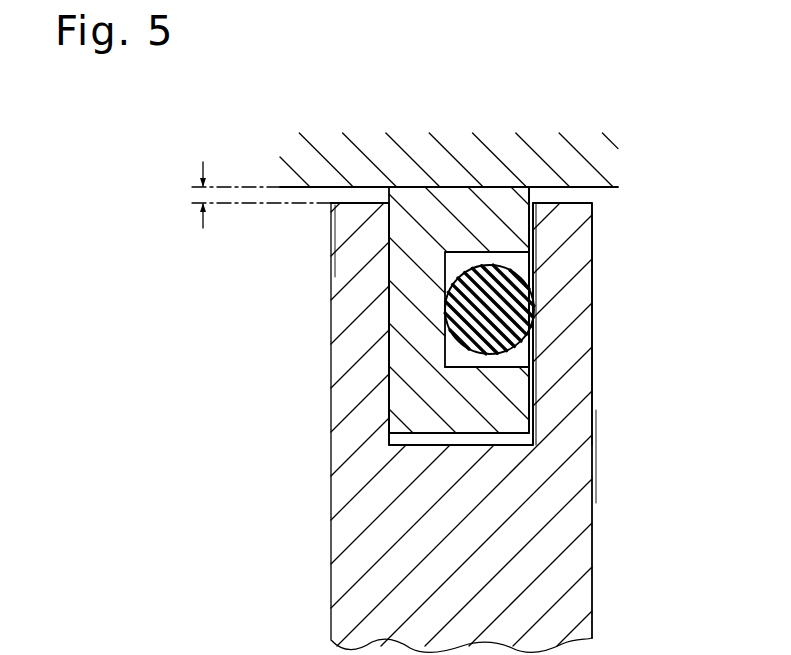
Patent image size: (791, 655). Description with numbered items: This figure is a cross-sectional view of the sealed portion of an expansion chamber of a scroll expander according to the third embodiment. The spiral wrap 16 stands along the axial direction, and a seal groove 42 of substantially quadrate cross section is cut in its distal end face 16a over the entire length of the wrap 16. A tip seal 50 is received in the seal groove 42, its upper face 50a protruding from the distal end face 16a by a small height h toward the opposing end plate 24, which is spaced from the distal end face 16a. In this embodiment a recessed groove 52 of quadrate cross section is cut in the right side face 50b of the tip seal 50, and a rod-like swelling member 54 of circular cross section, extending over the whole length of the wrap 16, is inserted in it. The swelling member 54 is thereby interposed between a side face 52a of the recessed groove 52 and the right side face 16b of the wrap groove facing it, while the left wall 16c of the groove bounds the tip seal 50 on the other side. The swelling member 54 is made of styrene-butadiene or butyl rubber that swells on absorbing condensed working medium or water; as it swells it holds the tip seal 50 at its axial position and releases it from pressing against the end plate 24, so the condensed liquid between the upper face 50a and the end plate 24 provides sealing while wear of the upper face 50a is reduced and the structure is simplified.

The wrap 16 is at (600, 529).
The distal end face of the wrap 16a is at (579, 203).
The right side face of the groove of the wrap 16b is at (528, 384).
The slot side wall 16c is at (392, 384).
The end plate 24 is at (332, 150).
The seal groove 42 is at (400, 294).
The tip seal 50 is at (434, 412).
The upper face of the tip seal 50a is at (455, 187).
The right side face of the tip seal 50b is at (531, 240).
The recessed groove 52 is at (511, 254).
The side face of the recessed groove 52a is at (447, 360).
The swelling member 54 is at (528, 312).
The height h is at (261, 179).